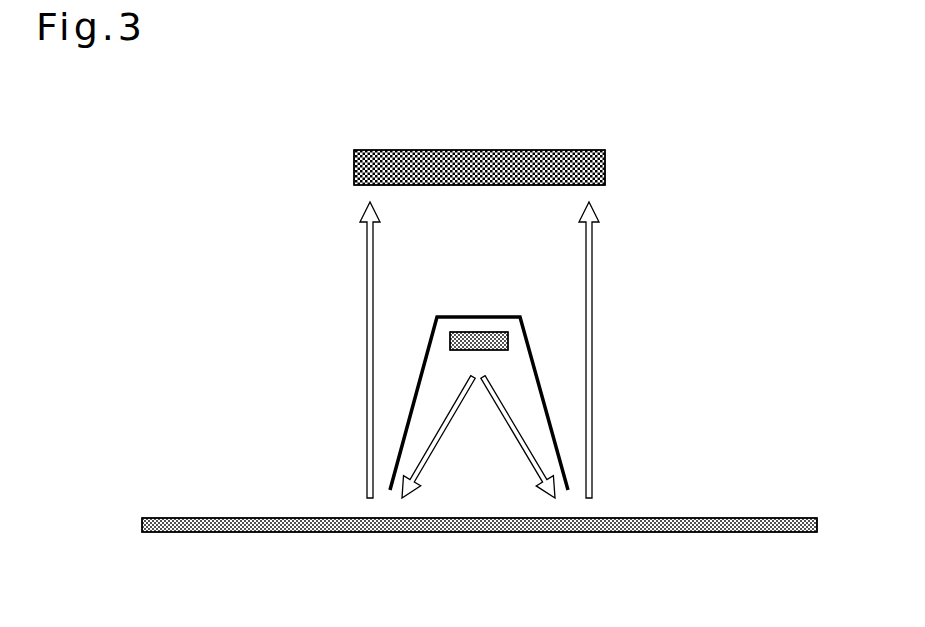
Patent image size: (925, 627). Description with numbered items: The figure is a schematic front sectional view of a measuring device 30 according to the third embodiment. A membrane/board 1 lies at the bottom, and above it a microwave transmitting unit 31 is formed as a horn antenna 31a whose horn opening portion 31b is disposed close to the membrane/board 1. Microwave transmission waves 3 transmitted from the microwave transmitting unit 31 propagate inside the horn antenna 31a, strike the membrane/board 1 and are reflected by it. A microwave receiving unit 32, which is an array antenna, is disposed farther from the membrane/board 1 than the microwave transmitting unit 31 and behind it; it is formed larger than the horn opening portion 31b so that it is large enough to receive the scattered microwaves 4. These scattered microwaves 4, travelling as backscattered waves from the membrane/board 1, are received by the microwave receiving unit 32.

The measuring device 30 is at (224, 198).
The microwave receiving unit 32 is at (525, 150).
The scattered microwaves 4 is at (366, 343).
The horn antenna 31a is at (537, 362).
The microwave transmitting unit 31 is at (487, 332).
The microwave transmission waves 3 is at (442, 428).
The membrane/board 1 is at (730, 517).
The horn opening portion 31b is at (488, 497).